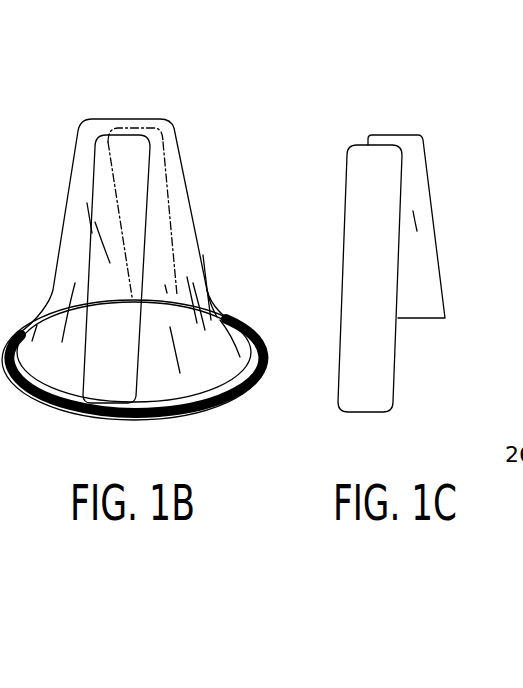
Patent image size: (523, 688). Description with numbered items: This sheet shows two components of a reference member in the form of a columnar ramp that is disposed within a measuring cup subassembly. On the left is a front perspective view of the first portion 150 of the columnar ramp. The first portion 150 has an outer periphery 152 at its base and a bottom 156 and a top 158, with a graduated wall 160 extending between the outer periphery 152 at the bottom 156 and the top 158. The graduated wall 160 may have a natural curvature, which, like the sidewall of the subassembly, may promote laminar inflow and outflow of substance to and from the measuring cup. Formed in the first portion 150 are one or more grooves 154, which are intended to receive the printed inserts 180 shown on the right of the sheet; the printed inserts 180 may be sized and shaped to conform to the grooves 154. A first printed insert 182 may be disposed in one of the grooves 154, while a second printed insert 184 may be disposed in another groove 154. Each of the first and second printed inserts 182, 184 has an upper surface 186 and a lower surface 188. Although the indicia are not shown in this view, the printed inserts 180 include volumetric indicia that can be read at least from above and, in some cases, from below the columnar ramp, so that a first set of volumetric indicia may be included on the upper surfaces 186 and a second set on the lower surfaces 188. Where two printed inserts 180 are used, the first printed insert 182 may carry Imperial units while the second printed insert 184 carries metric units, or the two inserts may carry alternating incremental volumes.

In FIG. 1B, the first portion 150 is at (132, 79).
In FIG. 1B, the outer periphery 152 is at (26, 392).
In FIG. 1B, the grooves 154 is at (147, 253).
In FIG. 1B, the bottom 156 is at (222, 408).
In FIG. 1B, the top 158 is at (179, 128).
In FIG. 1B, the graduated wall 160 is at (60, 258).
In FIG. 1C, the printed inserts 180 is at (355, 102).
In FIG. 1C, the first printed insert 182 is at (395, 377).
In FIG. 1C, the second printed insert 184 is at (437, 292).
In FIG. 1C, the upper surface 186 is at (358, 230).
In FIG. 1C, the lower surface 188 is at (413, 214).